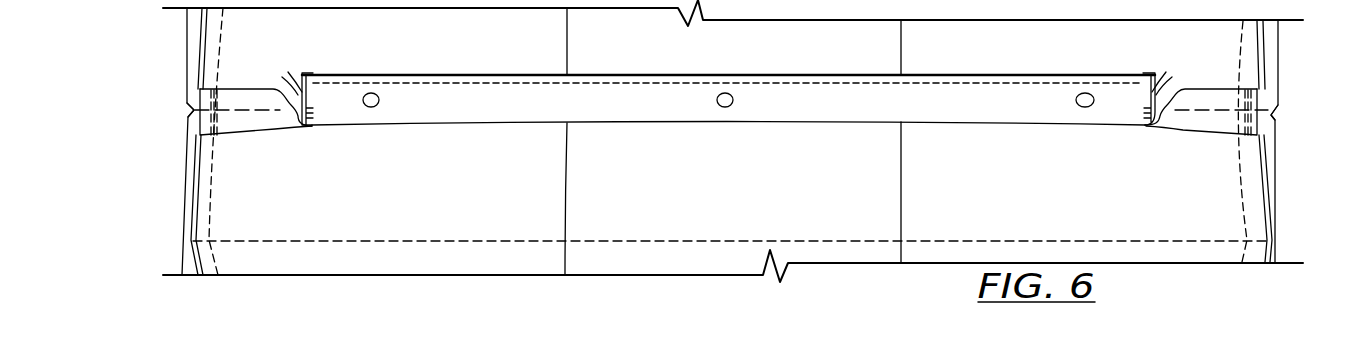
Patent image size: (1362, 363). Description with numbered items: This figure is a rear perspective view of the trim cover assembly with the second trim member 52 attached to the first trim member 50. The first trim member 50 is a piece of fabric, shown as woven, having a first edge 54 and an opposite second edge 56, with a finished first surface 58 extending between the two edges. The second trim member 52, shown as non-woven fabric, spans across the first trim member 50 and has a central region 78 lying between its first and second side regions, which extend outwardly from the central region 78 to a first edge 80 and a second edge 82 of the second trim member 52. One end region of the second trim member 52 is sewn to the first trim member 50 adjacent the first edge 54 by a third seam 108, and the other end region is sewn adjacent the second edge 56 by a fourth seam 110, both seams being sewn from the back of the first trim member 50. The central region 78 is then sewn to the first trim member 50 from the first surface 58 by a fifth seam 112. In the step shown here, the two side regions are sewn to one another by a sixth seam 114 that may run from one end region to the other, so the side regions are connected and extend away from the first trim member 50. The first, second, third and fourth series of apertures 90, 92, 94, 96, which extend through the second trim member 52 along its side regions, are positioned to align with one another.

The first trim member 50 is at (698, 151).
The first surface 58 is at (257, 200).
The first edge 54 is at (202, 63).
The second edge 56 is at (1263, 62).
The second trim member 52 is at (728, 111).
The central region 78 is at (435, 125).
The first edge 80 is at (728, 77).
The second edge 82 is at (958, 75).
The sixth seam 114 is at (585, 75).
The first series of apertures 90 is at (728, 134).
The second series of apertures 92 is at (728, 134).
The third series of apertures 94 is at (728, 134).
The fourth series of apertures 96 is at (722, 107).
The third seam 108 is at (192, 128).
The fourth seam 110 is at (1260, 127).
The fifth seam 112 is at (268, 113).